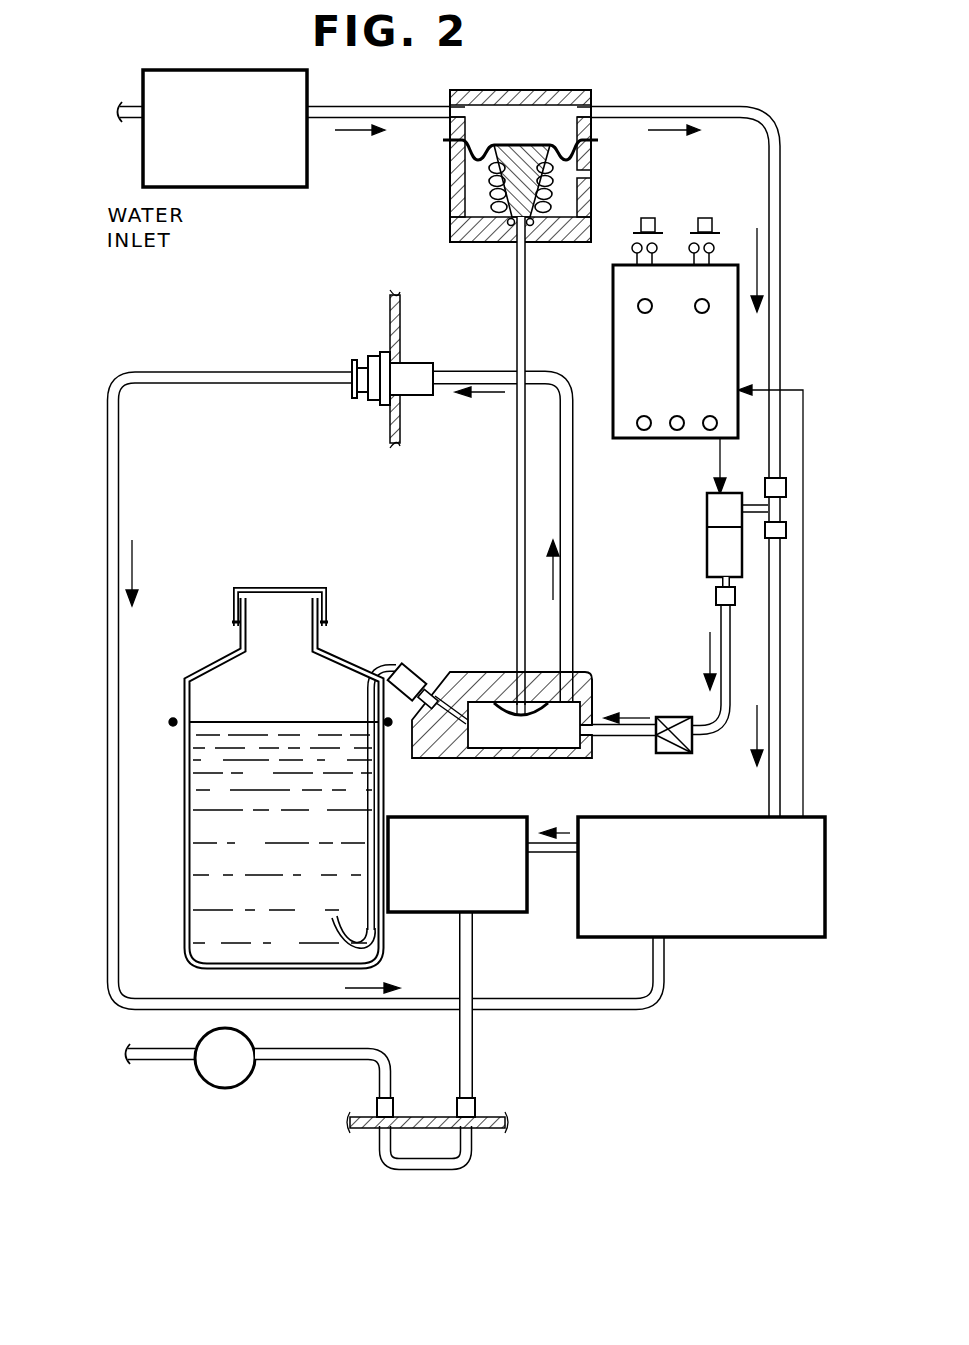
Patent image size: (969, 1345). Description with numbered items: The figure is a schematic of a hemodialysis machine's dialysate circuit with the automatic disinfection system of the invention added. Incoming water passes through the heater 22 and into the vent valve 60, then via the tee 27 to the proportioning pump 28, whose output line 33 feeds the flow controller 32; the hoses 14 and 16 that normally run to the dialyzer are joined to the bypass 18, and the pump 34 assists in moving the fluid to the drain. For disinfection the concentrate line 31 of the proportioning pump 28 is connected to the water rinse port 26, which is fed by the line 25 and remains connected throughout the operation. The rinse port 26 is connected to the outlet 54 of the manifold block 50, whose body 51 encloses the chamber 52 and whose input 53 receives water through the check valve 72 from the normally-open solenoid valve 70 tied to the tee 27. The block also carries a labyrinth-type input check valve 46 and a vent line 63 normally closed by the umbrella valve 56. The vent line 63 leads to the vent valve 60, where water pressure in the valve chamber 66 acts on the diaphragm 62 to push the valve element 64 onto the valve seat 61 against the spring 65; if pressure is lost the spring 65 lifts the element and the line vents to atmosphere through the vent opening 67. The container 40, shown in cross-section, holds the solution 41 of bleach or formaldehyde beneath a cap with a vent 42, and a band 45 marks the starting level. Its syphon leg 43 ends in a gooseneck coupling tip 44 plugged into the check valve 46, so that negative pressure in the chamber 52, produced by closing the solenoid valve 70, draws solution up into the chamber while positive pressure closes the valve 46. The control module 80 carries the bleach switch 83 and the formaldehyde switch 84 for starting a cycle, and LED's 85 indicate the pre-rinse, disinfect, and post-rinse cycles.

The hose 14 is at (390, 1075).
The hose 16 is at (472, 1056).
The bypass 18 is at (468, 1145).
The heater 22 is at (258, 180).
The line 25 is at (573, 543).
The water rinse port 26 is at (415, 372).
The tee 27 is at (766, 488).
The proportioning pump 28 is at (710, 937).
The concentrate line 31 is at (295, 373).
The flow controller 32 is at (455, 915).
The output line 33 is at (553, 857).
The pump 34 is at (248, 1073).
The container 40 is at (265, 752).
The solution 41 is at (284, 809).
The vent 42 is at (280, 587).
The syphon leg 43 is at (368, 860).
The coupling tip 44 is at (406, 675).
The band 45 is at (171, 722).
The input check valve 46 is at (450, 732).
The manifold block 50 is at (529, 719).
The body 51 is at (492, 672).
The chamber 52 is at (550, 760).
The input 53 is at (593, 740).
The outlet 54 is at (577, 672).
The umbrella valve 56 is at (527, 716).
The vent valve 60 is at (520, 170).
The valve seat 61 is at (531, 226).
The diaphragm 62 is at (520, 142).
The vent line 63 is at (516, 490).
The valve element 64 is at (522, 170).
The spring 65 is at (490, 190).
The valve chamber 66 is at (535, 90).
The vent opening 67 is at (588, 175).
The solenoid valve 70 is at (707, 516).
The check valve 72 is at (682, 718).
The control module 80 is at (659, 325).
The bleach switch 83 is at (655, 224).
The formaldehyde switch 84 is at (713, 224).
The LED's 85 is at (680, 440).